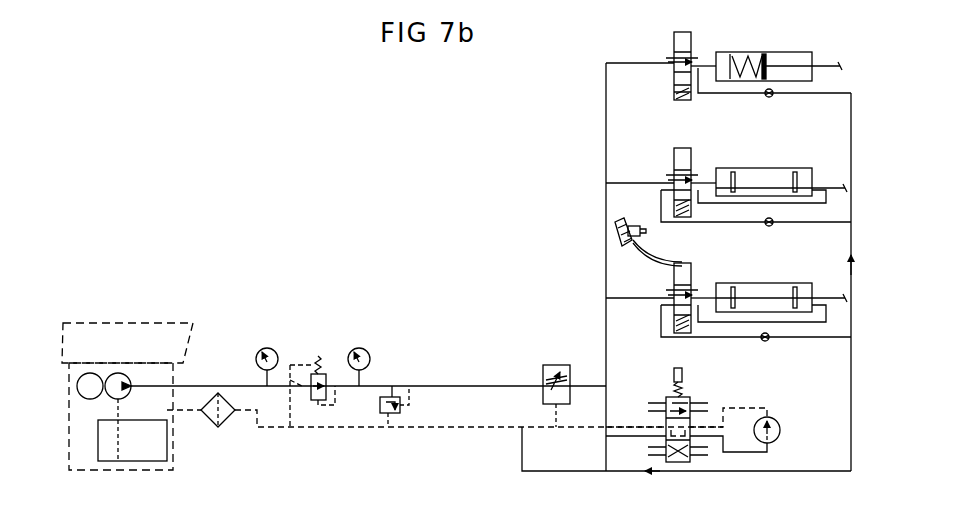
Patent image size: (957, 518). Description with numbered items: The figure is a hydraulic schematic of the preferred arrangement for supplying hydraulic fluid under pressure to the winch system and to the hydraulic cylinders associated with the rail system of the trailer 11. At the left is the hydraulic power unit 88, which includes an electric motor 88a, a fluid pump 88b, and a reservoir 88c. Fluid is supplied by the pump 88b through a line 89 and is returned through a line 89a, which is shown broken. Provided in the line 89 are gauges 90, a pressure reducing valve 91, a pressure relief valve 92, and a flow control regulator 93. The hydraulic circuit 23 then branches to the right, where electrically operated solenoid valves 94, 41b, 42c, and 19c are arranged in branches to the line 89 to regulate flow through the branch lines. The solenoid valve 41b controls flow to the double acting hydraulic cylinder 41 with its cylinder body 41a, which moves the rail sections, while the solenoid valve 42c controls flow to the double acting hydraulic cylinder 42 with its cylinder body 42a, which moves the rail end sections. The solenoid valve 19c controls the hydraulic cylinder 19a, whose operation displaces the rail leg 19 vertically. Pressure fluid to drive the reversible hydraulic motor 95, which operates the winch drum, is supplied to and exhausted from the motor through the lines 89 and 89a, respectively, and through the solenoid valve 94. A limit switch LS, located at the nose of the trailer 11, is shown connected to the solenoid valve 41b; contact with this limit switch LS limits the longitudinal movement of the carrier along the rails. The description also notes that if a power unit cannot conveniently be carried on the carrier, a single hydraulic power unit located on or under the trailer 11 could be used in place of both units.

The trailer 11 is at (120, 322).
The rail leg 19 is at (775, 64).
The hydraulic cylinder 19a is at (731, 48).
The solenoid valve 19c is at (676, 48).
The hydraulic circuit 23 is at (478, 236).
The double acting hydraulic cylinder 41 is at (748, 261).
The cylinder 41a is at (768, 296).
The solenoid valve 41b is at (676, 286).
The double acting hydraulic cylinder 42 is at (748, 146).
The cylinder 42a is at (766, 185).
The solenoid valve 42c is at (676, 172).
The hydraulic power unit 88 is at (50, 361).
The electric motor 88a is at (90, 373).
The fluid pump 88b is at (124, 374).
The reservoir 88c is at (132, 452).
The line 89 is at (203, 386).
The line 89a is at (345, 430).
The gauges 90 is at (275, 348).
The pressure reducing valve 91 is at (322, 372).
The pressure relief valve 92 is at (388, 414).
The flow control regulator 93 is at (552, 365).
The solenoid valve 94 is at (690, 396).
The reversible hydraulic motor 95 is at (782, 426).
The limit switch LS is at (644, 222).